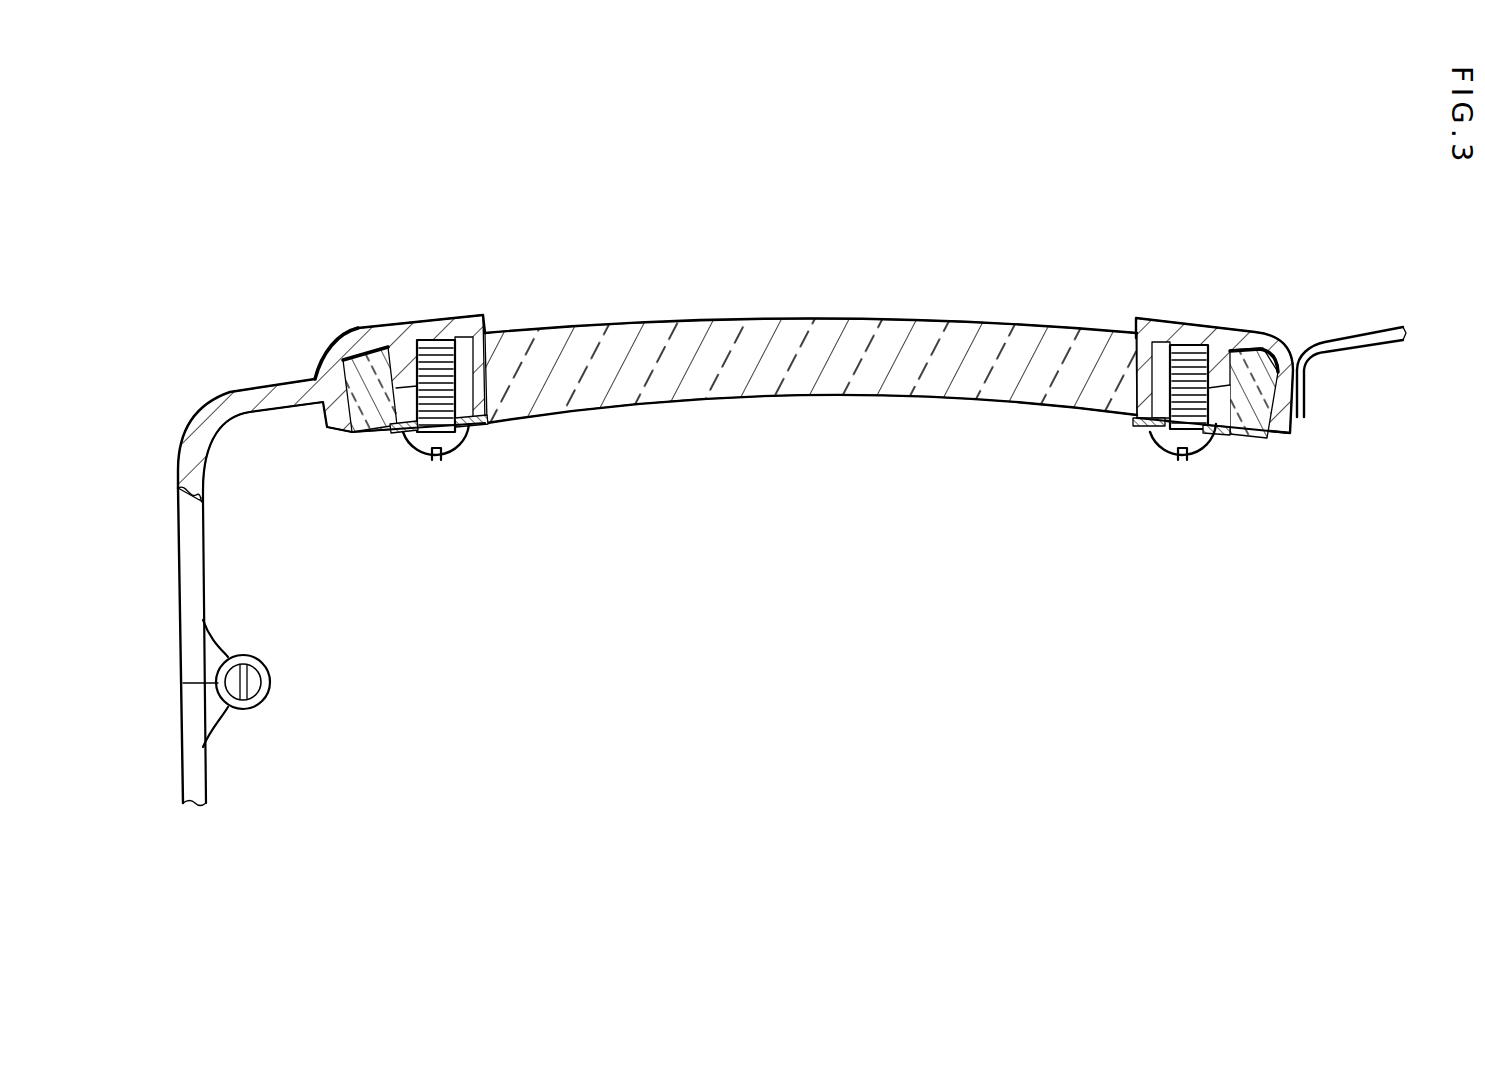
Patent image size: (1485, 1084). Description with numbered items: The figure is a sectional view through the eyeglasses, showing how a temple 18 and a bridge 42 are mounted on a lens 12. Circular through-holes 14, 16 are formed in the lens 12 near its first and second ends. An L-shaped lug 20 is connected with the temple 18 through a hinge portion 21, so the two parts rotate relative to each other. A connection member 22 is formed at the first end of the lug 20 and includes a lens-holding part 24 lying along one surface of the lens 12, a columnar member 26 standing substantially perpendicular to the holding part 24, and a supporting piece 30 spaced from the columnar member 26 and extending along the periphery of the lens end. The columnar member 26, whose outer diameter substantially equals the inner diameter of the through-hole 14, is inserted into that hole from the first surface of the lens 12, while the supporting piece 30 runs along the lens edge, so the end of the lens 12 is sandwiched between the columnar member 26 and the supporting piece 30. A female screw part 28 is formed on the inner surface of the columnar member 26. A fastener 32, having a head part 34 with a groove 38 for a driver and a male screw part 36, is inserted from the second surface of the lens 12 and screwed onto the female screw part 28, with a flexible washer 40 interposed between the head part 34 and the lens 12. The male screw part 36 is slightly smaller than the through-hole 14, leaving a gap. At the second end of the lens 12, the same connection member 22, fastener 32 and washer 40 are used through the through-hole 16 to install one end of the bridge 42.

The lens 12 is at (797, 352).
The through-hole 14 is at (483, 390).
The through-hole 16 is at (1143, 389).
The temple 18 is at (197, 775).
The lug 20 is at (250, 400).
The hinge portion 21 is at (262, 681).
The connection member 22 is at (515, 263).
The lens-holding part 24 is at (372, 333).
The columnar member 26 is at (463, 363).
The female screw part 28 is at (442, 345).
The supporting piece 30 is at (318, 372).
The fastener 32 is at (510, 538).
The head part 34 is at (425, 443).
The male screw part 36 is at (400, 427).
The groove 38 is at (441, 472).
The washer 40 is at (480, 426).
The bridge 42 is at (1362, 335).